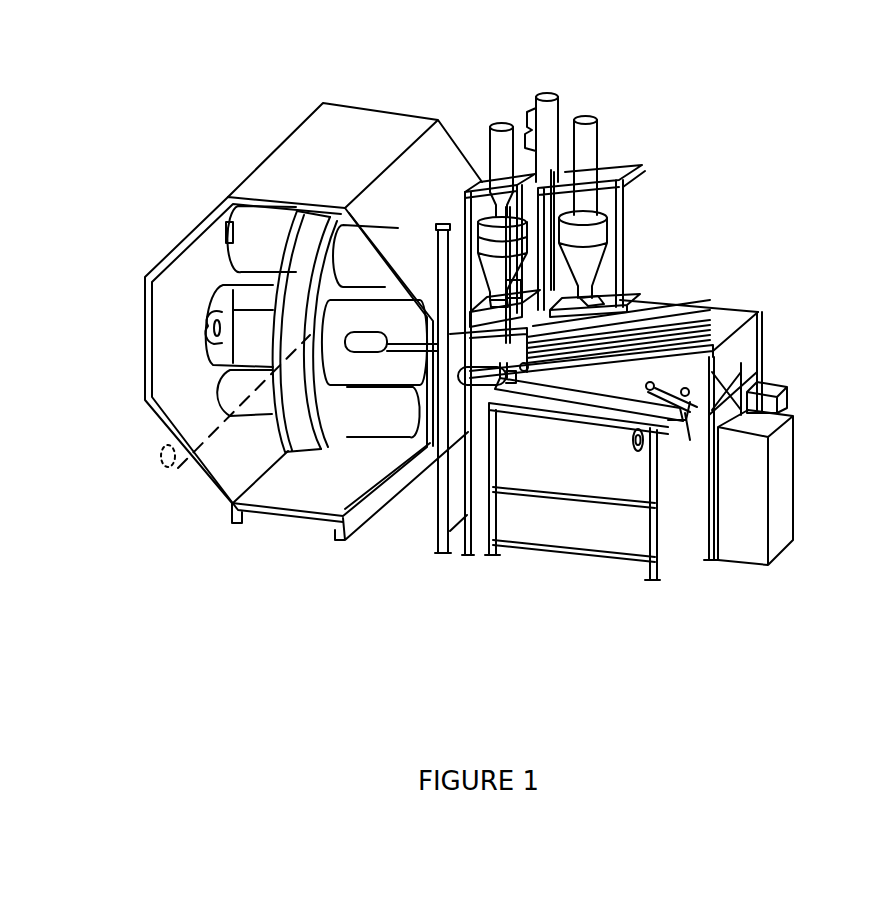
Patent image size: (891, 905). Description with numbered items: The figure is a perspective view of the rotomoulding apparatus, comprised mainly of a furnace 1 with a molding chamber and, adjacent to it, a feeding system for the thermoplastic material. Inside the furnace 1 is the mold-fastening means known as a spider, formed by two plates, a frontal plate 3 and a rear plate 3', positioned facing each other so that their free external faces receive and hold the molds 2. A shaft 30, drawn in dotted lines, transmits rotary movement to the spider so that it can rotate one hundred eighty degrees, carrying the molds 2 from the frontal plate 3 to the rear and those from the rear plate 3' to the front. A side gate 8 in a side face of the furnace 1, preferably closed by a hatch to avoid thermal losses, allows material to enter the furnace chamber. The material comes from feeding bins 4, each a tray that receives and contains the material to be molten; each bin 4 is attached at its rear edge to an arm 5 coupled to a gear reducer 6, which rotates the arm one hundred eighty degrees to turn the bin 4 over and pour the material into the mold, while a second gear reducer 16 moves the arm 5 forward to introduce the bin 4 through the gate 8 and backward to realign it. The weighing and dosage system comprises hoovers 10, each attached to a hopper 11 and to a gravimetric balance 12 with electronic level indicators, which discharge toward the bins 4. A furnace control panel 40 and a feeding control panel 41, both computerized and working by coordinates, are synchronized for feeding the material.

The furnace 1 is at (320, 162).
The molds 2 is at (248, 298).
The frontal plate 3 is at (317, 437).
The rear plate 3' is at (297, 434).
The shaft 30 is at (215, 423).
The feeding bin 4 is at (362, 350).
The arm 5 is at (578, 386).
The gear reducer 6 is at (661, 408).
The second gear reducer 16 is at (668, 402).
The side gate 8 is at (464, 557).
The furnace control panel 40 is at (739, 516).
The feeding control panel 41 is at (784, 395).
The hoover 10 is at (592, 138).
The hopper 11 is at (588, 244).
The gravimetric balance 12 is at (603, 305).